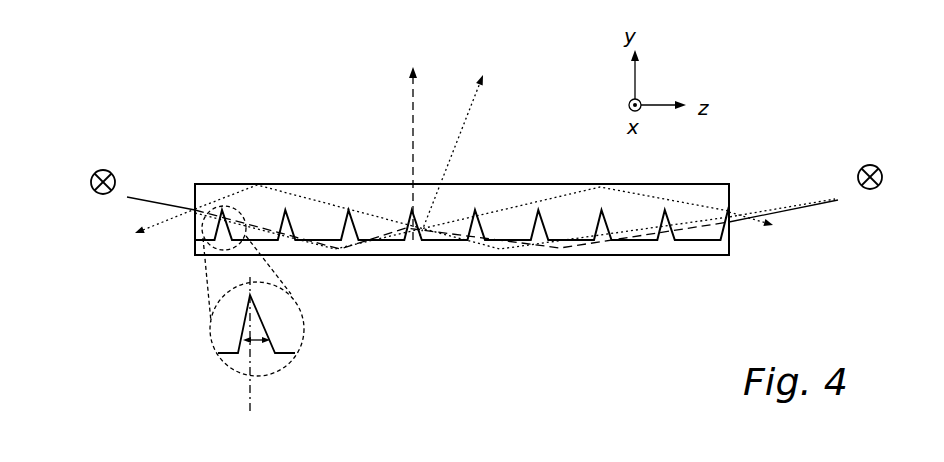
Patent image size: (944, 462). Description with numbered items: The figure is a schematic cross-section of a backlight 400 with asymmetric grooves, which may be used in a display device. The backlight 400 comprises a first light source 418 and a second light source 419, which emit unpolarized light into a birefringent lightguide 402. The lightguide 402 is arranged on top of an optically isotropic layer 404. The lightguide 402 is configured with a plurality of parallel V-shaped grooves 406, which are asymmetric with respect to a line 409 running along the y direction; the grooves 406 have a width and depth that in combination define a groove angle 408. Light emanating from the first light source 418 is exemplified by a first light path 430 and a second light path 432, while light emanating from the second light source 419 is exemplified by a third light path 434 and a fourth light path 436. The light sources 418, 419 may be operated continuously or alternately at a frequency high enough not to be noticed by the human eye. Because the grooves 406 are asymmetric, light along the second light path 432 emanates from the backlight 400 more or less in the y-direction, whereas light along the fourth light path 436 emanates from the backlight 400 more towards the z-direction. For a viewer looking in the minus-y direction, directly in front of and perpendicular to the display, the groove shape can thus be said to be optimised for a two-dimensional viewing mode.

The backlight 400 is at (470, 218).
The birefringent lightguide 402 is at (653, 193).
The optically isotropic layer 404 is at (615, 255).
The asymmetric V-shaped parallel grooves 406 is at (542, 222).
The groove angle 408 is at (260, 343).
The line along direction y 409 is at (252, 410).
The first light source 418 is at (103, 169).
The second light source 419 is at (870, 165).
The first light path 430 is at (160, 204).
The second light path 432 is at (413, 113).
The third light path 434 is at (163, 223).
The fourth light path 436 is at (472, 108).